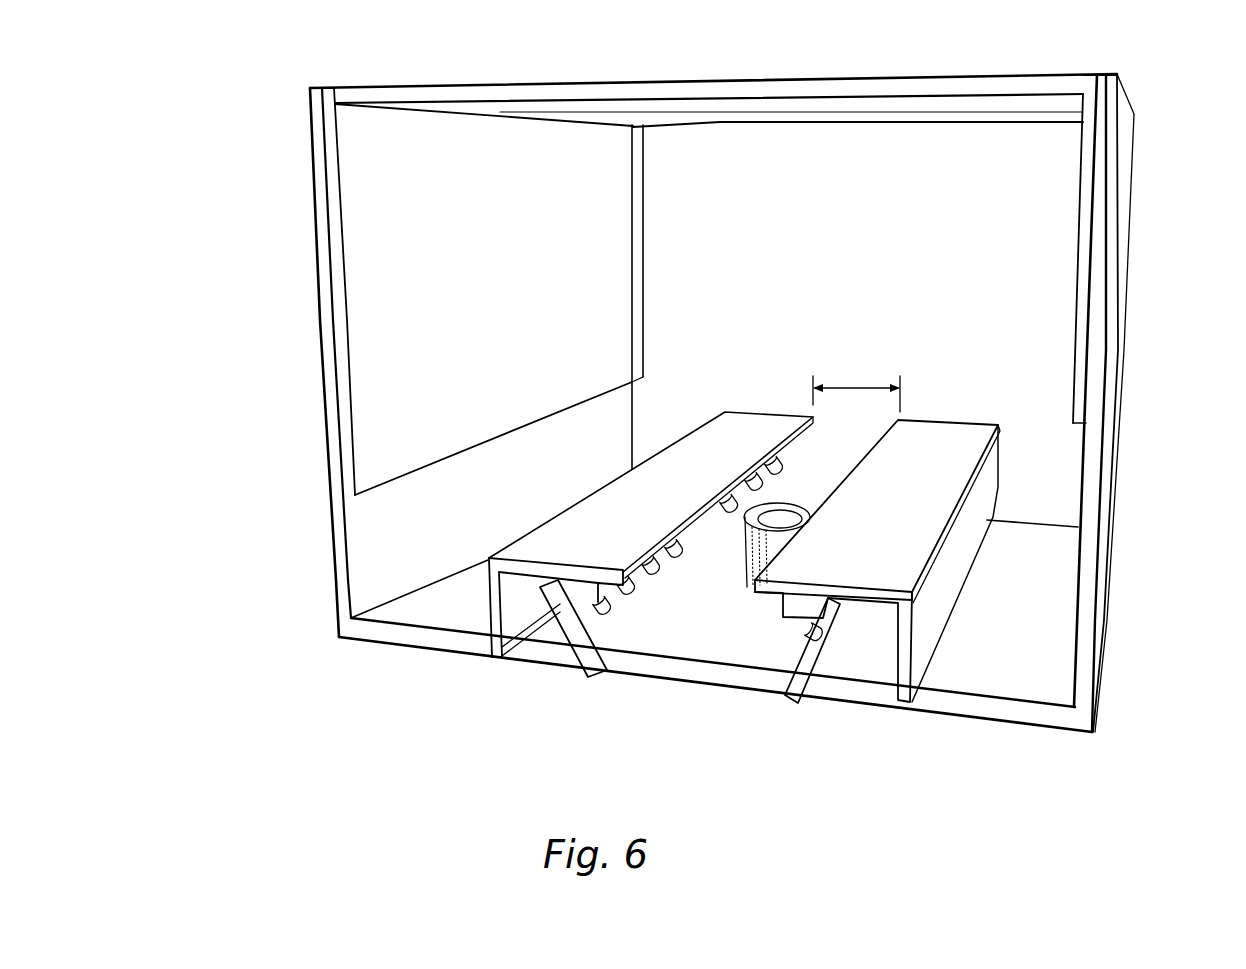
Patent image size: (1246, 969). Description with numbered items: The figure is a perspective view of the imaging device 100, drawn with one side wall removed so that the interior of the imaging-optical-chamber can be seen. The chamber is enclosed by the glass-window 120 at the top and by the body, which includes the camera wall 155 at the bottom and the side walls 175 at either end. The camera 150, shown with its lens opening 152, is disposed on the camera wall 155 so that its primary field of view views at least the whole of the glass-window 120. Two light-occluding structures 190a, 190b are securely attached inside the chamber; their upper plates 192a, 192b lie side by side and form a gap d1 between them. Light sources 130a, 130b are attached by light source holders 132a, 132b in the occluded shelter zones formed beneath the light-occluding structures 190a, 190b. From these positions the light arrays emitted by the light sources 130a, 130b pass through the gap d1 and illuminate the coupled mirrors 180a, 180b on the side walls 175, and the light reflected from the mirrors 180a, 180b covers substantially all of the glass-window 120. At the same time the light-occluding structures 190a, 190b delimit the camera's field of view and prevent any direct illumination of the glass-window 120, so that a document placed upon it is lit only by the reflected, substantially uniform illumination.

The imaging device 100 is at (285, 175).
The glass-window 120 is at (595, 92).
The side wall 175 is at (333, 475).
The camera wall 155 is at (850, 692).
The mirror 180a is at (365, 332).
The mirror 180b is at (1077, 290).
The light-occluding structure 192a is at (782, 425).
The light-occluding structure 192b is at (917, 430).
The light source 130a is at (730, 507).
The light source 130b is at (805, 633).
The light-occluding structure 190a is at (487, 590).
The light-occluding structure 190b is at (922, 637).
The light source holder 132a is at (580, 652).
The light source holder 132b is at (800, 698).
The camera 150 is at (748, 535).
The opening of cylindrical component 152 is at (797, 506).
The gap d1 is at (856, 389).